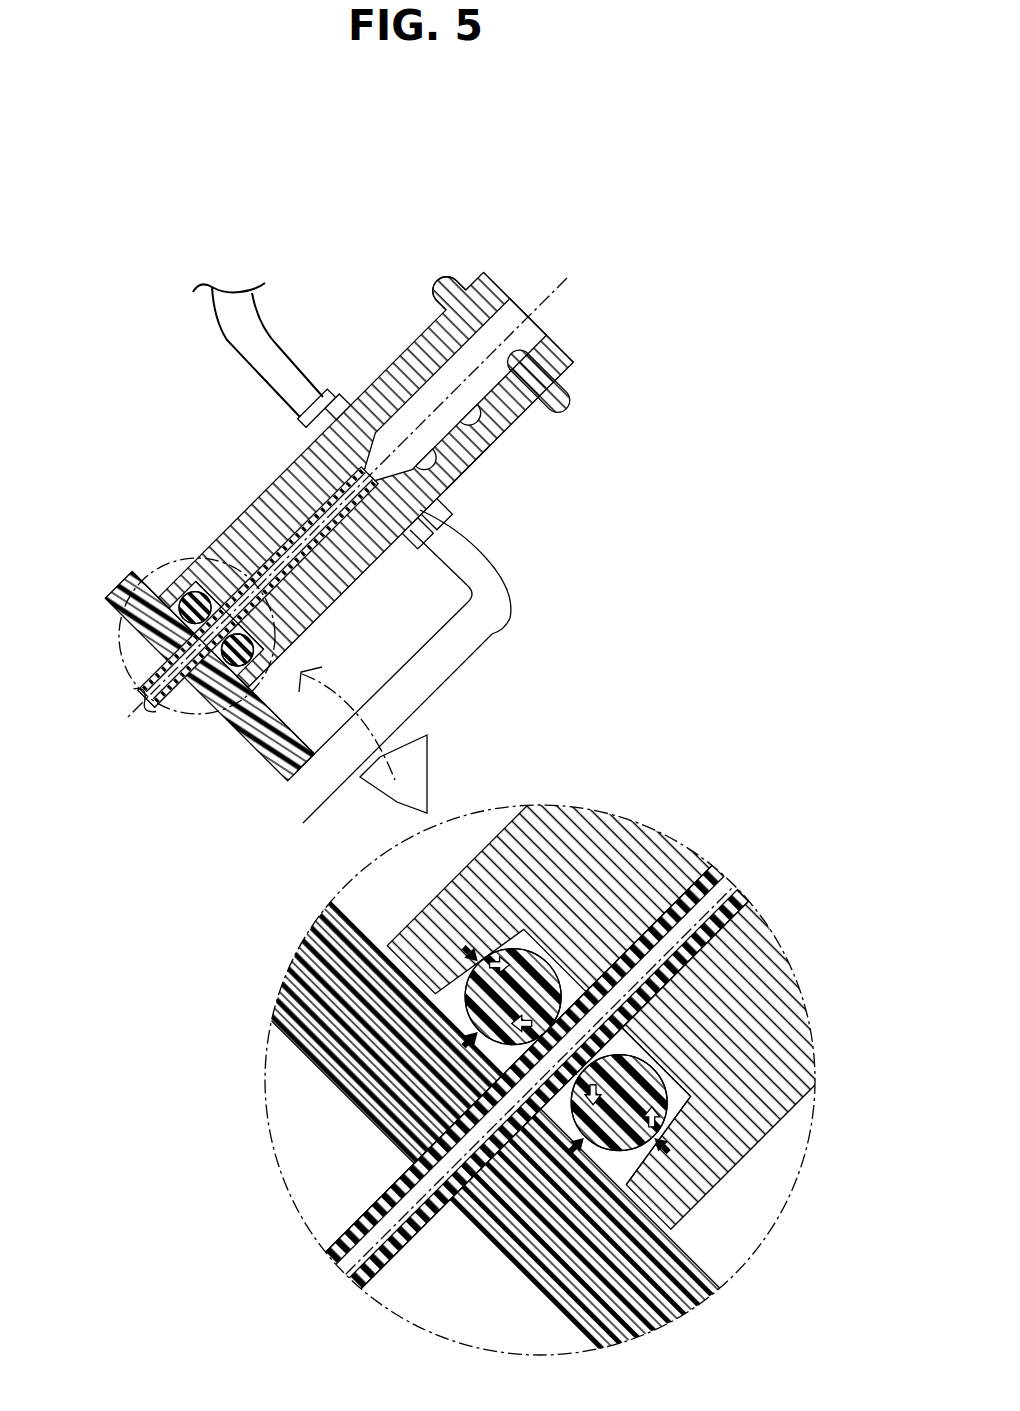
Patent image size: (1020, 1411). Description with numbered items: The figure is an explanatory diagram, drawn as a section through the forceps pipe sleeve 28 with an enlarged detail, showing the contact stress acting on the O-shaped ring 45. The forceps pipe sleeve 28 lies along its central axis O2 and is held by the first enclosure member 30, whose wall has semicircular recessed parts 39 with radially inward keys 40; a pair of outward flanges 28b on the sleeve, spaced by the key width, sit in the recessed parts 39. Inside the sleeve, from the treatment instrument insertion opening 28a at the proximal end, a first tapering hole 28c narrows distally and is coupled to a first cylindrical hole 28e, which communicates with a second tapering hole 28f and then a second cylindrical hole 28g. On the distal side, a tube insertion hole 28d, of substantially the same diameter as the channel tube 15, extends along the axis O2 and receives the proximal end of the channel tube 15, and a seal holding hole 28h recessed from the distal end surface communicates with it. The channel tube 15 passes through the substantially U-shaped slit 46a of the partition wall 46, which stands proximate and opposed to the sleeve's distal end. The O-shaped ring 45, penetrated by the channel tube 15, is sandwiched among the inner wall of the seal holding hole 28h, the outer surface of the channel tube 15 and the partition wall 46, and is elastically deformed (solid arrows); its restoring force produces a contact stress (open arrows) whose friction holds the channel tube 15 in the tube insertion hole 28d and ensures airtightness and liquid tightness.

The channel tube 15 is at (152, 682).
The forceps pipe sleeve 28 is at (412, 312).
The treatment instrument insertion opening 28a is at (547, 322).
The outward flanges 28b is at (445, 532).
The first tapering hole 28c is at (562, 376).
The tube insertion hole 28d is at (430, 633).
The first cylindrical hole 28e is at (503, 413).
The second tapering hole 28f is at (460, 477).
The second cylindrical hole 28g is at (375, 480).
The seal holding hole 28h is at (232, 692).
The first enclosure member 30 is at (513, 613).
The recessed parts 39 is at (343, 393).
The keys 40 is at (396, 375).
The O-shaped ring 45 is at (380, 692).
The partition wall 46 is at (290, 682).
The slit 46a is at (200, 705).
The central axis O2 is at (438, 762).